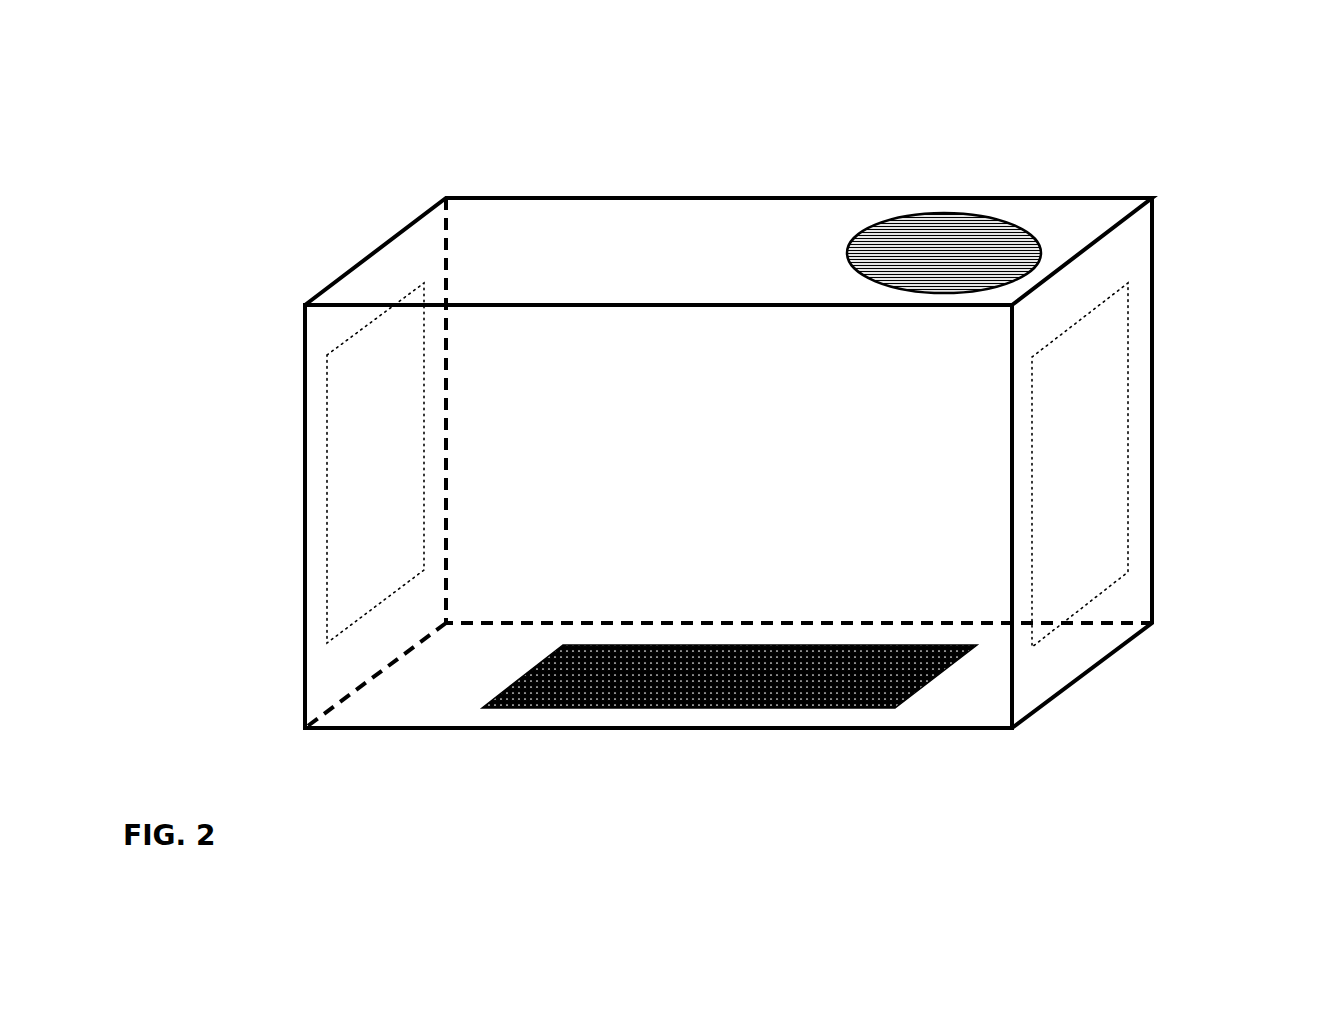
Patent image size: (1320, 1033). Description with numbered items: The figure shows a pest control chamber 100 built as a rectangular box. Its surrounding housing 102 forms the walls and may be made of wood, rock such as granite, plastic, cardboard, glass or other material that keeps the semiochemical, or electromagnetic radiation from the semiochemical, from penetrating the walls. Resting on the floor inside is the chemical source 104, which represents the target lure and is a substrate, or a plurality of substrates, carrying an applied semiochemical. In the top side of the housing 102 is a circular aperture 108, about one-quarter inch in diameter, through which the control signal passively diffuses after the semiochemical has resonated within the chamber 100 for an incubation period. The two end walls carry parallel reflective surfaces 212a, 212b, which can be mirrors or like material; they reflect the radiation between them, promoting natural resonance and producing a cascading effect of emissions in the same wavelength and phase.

The chamber 100 is at (517, 164).
The housing 102 is at (332, 679).
The chemical source 104 is at (885, 678).
The aperture 108 is at (1019, 228).
The reflective surface 212a is at (353, 446).
The reflective surface 212b is at (1112, 339).